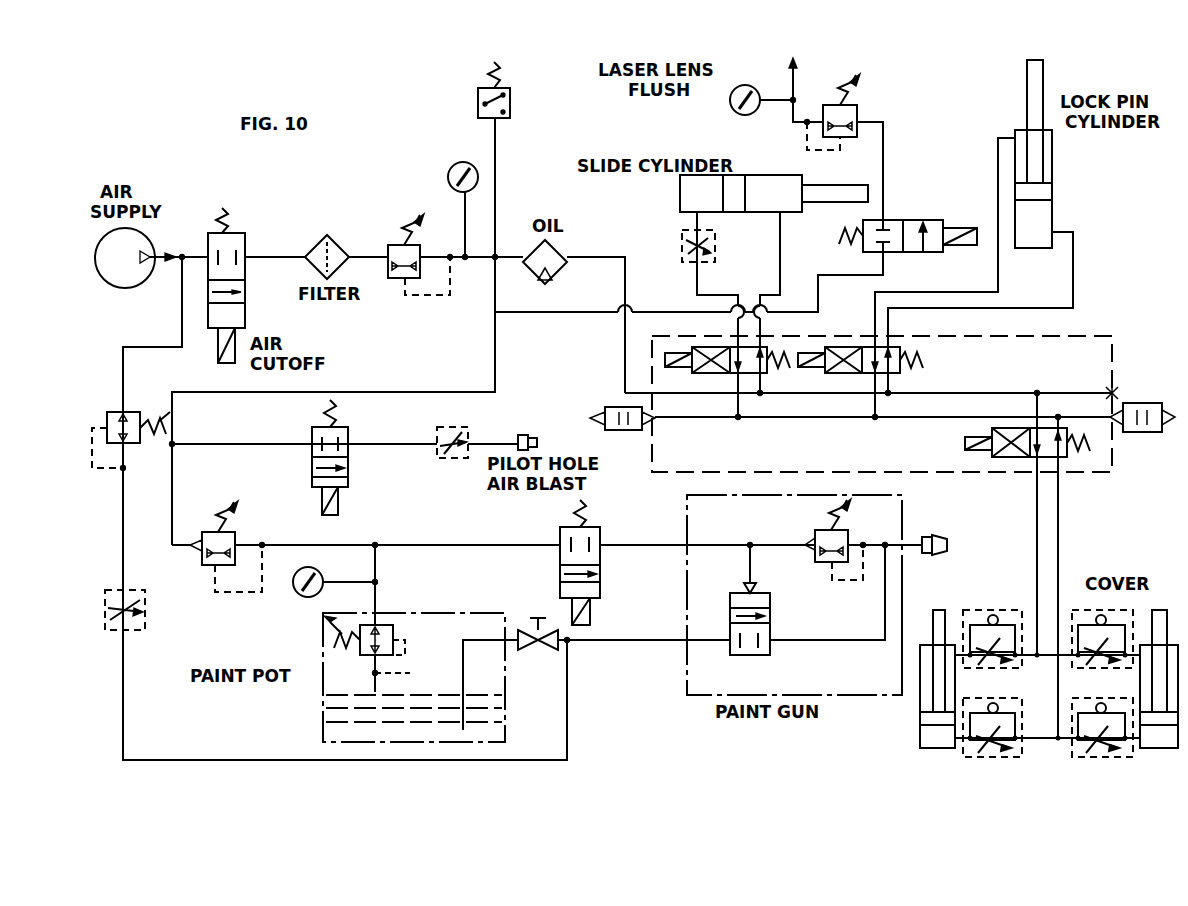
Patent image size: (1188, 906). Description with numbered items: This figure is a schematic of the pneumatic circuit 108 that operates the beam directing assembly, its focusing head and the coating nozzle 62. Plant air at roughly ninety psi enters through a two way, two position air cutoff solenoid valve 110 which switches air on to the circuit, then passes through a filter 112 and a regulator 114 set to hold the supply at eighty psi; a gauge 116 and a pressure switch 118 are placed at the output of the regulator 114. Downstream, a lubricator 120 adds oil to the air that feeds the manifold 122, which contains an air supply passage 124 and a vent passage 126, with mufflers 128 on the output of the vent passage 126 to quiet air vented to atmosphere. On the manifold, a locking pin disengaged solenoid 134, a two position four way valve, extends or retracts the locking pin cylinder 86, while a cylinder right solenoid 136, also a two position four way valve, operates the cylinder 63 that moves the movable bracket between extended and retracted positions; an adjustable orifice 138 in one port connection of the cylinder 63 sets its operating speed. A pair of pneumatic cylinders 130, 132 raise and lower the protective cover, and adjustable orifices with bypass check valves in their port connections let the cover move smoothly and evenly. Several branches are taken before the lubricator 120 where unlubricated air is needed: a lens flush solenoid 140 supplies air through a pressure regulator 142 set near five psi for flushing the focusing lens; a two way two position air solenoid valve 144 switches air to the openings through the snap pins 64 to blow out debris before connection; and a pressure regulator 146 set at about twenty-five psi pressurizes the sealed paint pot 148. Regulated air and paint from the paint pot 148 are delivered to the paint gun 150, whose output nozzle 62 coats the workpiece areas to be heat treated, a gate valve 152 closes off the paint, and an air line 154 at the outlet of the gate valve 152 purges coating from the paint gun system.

The coating nozzle 62 is at (938, 535).
The cylinder 63 is at (690, 190).
The snap pins 64 is at (533, 436).
The locking pin cylinder 86 is at (1052, 173).
The pneumatic circuit 108 is at (630, 726).
The air cutoff solenoid valve 110 is at (245, 238).
The filter 112 is at (340, 243).
The regulator 114 is at (400, 280).
The gauge 116 is at (451, 167).
The pressure switch 118 is at (510, 102).
The lubricator 120 is at (562, 246).
The manifold 122 is at (670, 332).
The air supply passage 124 is at (995, 393).
The vent passage 126 is at (780, 417).
The mufflers 128 is at (618, 407).
The pneumatic cylinder 130 is at (920, 736).
The pneumatic cylinder 132 is at (1158, 738).
The locking pin disengaged solenoid 134 is at (897, 372).
The cylinder right solenoid 136 is at (707, 373).
The adjustable orifice 138 is at (715, 245).
The lens flush solenoid 140 is at (890, 220).
The pressure regulator 142 is at (857, 112).
The air solenoid valve 144 is at (348, 480).
The pressure regulator 146 is at (235, 532).
The paint pot 148 is at (322, 700).
The paint gun 150 is at (903, 612).
The gate valve 152 is at (538, 652).
The air line 154 is at (570, 683).